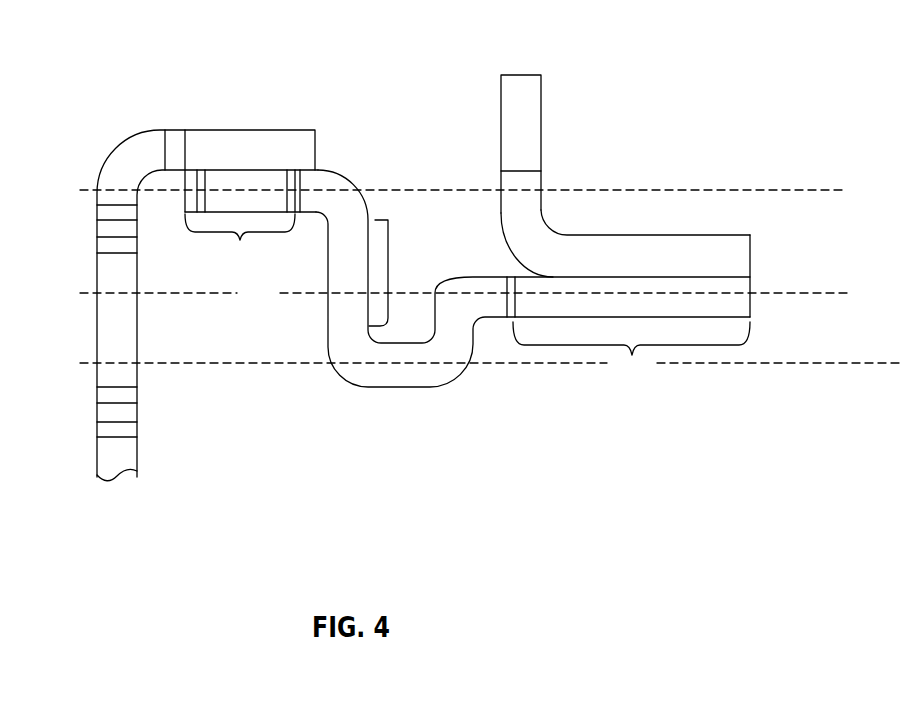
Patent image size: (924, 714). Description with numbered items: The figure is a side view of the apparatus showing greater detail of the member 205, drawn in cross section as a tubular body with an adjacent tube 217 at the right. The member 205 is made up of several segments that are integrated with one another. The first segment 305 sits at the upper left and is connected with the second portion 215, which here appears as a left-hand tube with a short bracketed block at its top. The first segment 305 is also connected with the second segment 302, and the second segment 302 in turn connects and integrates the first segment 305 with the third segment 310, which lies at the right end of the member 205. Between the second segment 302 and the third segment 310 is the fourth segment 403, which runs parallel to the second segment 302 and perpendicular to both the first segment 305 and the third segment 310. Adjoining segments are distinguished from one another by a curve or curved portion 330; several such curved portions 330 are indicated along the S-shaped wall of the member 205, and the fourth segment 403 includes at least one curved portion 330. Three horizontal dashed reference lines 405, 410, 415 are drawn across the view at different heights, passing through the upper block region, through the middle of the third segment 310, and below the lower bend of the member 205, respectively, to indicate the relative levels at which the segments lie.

The member 205 is at (568, 490).
The second portion 215 is at (178, 140).
The second tube 217 is at (499, 98).
The second segment 302 is at (400, 248).
The first segment 305 is at (240, 243).
The third segment 310 is at (628, 335).
The curved portion 330 is at (315, 218).
The fourth segment 403 is at (420, 332).
The first axis 405 is at (782, 190).
The second axis 410 is at (782, 292).
The third axis 415 is at (852, 362).